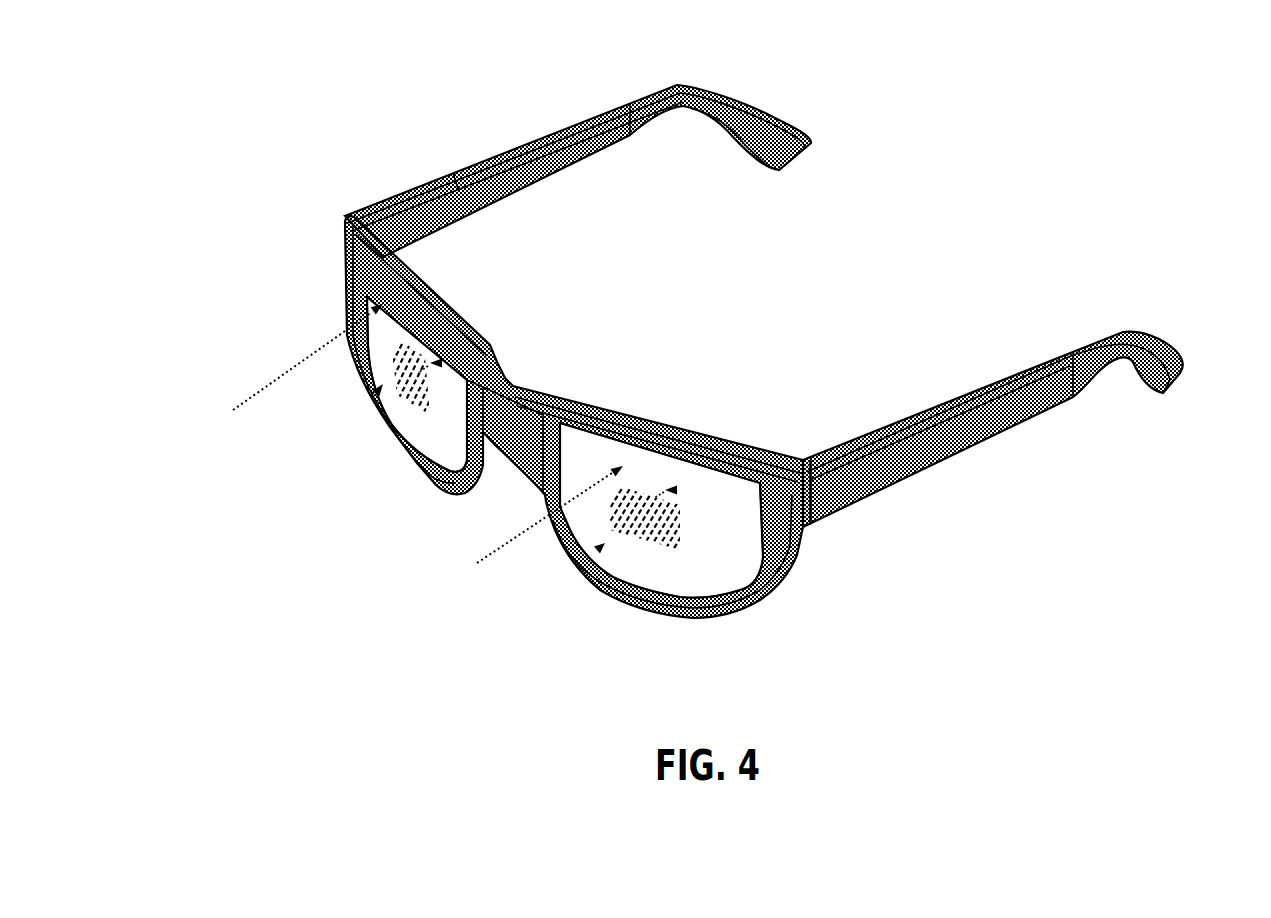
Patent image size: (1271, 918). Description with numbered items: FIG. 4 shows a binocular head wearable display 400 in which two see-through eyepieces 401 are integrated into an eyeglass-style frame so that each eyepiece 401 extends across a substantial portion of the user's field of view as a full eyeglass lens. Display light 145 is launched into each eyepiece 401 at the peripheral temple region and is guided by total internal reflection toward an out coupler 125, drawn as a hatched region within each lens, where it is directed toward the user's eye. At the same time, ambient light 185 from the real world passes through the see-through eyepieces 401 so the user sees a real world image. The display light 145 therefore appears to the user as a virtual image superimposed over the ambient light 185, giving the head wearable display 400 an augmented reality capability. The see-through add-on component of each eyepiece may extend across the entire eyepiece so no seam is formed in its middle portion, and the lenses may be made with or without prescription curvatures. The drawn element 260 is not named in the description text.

The binocular head wearable display 400 is at (1046, 95).
The lens 260 is at (375, 302).
The out coupler 125 is at (420, 388).
The display light 145 is at (440, 363).
The see-through eyepiece 401 is at (380, 388).
The ambient light 185 is at (257, 396).